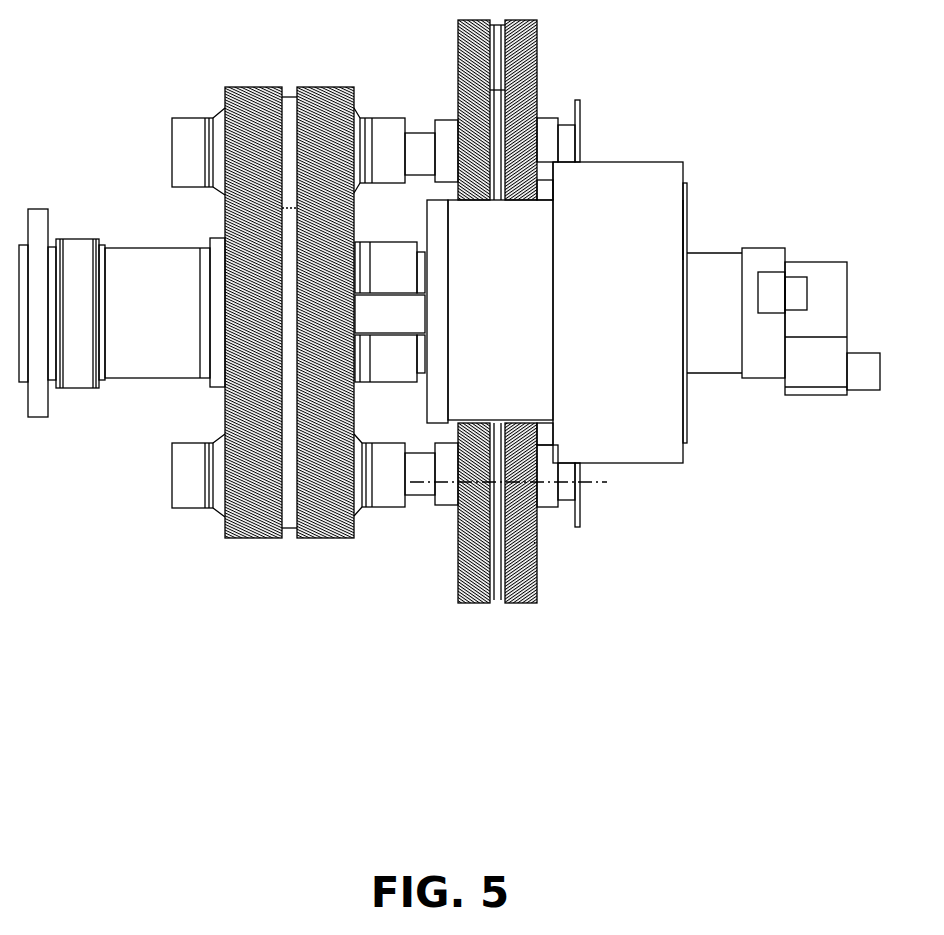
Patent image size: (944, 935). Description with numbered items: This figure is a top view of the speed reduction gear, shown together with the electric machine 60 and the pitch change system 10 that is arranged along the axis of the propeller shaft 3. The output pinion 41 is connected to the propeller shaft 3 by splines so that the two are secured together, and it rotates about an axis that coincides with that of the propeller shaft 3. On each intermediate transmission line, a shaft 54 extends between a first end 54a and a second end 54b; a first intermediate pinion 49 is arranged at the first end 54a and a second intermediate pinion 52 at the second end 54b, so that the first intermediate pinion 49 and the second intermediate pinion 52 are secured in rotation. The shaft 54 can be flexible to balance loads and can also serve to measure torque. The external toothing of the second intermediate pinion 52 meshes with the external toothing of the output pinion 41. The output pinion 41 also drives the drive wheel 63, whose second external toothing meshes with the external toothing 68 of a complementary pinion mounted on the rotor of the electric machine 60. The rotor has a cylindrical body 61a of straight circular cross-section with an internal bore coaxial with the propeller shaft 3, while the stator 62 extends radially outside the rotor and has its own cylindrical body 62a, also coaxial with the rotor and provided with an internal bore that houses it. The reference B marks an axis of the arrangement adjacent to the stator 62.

The propeller shaft 3 is at (128, 272).
The output pinion 41 is at (313, 538).
The second intermediate pinion 52 is at (188, 128).
The shaft 54 is at (417, 130).
The first end 54a is at (412, 496).
The second end 54b is at (428, 510).
The external toothing 68 is at (443, 217).
The drive wheel 63 is at (407, 320).
The first intermediate pinion 49 is at (520, 177).
The cylindrical body 61a is at (625, 223).
The stator 62 is at (670, 448).
The cylindrical body 62a is at (552, 198).
The electric machine 60 is at (675, 230).
The pitch change system 10 is at (820, 260).
The axis B is at (592, 482).